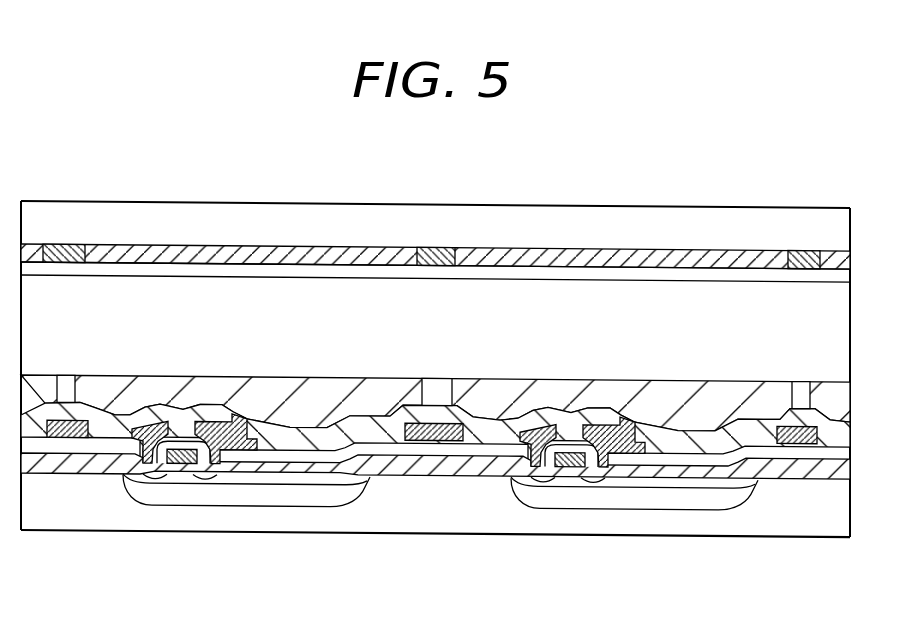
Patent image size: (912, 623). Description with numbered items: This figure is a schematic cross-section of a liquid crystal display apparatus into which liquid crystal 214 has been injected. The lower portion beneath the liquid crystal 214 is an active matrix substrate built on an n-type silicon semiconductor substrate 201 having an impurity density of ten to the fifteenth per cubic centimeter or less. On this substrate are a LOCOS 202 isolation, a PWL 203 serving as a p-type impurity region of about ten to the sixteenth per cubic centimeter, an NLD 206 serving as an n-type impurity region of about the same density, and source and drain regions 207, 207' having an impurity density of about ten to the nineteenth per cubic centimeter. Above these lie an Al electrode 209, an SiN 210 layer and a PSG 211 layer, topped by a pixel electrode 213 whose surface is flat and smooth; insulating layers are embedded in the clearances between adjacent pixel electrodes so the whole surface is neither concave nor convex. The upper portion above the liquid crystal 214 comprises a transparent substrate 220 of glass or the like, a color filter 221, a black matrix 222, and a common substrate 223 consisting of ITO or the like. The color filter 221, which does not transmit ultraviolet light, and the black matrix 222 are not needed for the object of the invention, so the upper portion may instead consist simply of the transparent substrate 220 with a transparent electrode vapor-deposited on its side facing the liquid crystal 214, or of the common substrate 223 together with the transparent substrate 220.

The n-type silicon semiconductor substrate 201 is at (838, 522).
The LOCOS 202 is at (770, 470).
The PWL 203 is at (705, 496).
The NLD 206 is at (588, 476).
The source region 207 is at (333, 528).
The drain region 207' is at (633, 531).
The Al electrode 209 is at (598, 420).
The SiN 210 is at (535, 418).
The PSG 211 is at (440, 383).
The pixel electrode 213 is at (304, 387).
The liquid crystal 214 is at (171, 300).
The transparent substrate 220 is at (520, 214).
The color filter 221 is at (255, 258).
The black matrix 222 is at (64, 255).
The common substrate 223 is at (682, 276).